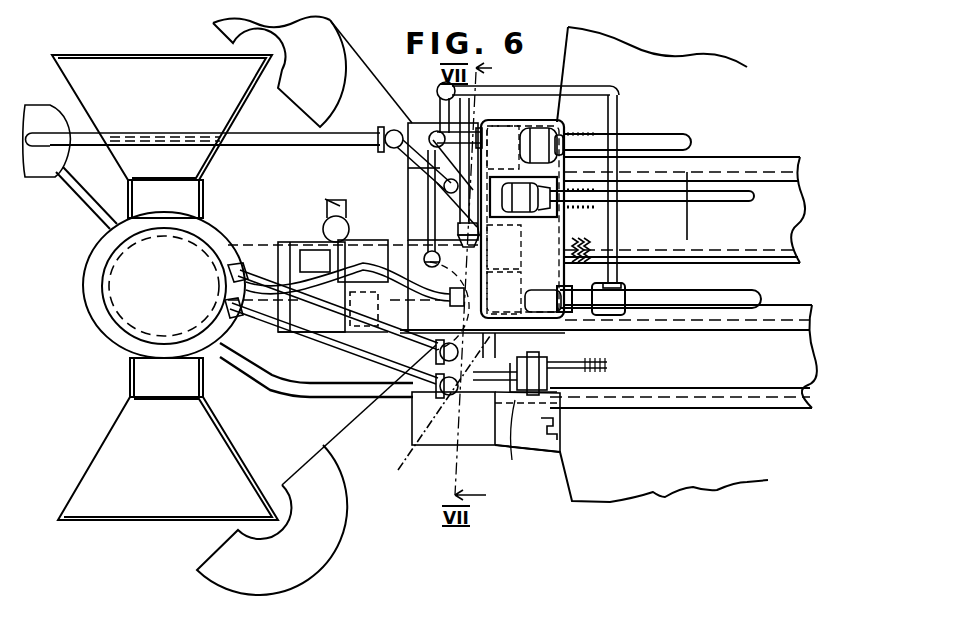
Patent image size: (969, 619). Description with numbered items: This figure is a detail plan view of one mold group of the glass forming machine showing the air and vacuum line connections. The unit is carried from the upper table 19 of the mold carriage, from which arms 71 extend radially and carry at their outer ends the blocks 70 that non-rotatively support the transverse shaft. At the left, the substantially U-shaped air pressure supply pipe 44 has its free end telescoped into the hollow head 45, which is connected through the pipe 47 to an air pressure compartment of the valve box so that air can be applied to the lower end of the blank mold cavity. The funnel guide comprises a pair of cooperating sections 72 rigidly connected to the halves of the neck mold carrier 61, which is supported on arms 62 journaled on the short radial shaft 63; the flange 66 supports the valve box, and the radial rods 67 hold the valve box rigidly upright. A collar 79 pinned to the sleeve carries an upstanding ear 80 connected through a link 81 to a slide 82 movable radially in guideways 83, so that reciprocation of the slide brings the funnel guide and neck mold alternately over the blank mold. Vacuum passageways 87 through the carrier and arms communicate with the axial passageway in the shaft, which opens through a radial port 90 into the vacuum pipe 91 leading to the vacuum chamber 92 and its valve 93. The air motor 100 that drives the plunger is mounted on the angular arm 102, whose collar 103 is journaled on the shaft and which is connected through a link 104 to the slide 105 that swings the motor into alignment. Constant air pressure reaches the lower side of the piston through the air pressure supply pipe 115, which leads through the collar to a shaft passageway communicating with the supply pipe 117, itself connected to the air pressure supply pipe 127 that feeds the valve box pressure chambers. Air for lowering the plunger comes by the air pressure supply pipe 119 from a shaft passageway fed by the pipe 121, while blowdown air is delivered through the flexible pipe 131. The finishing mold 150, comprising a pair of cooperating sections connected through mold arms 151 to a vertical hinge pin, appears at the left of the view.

The upper table 19 is at (610, 497).
The air pressure supply pipe 44 is at (82, 206).
The hollow head 45 is at (52, 92).
The pipe 47 is at (286, 144).
The neck mold carrier 61 is at (92, 254).
The arms 62 is at (268, 240).
The radial shaft 63 is at (363, 283).
The flange 66 is at (566, 334).
The radial rods 67 is at (634, 198).
The blocks 70 is at (434, 456).
The arms 71 is at (520, 444).
The funnel guide sections 72 is at (108, 62).
The collar 79 is at (412, 186).
The ear 80 is at (415, 208).
The link 81 is at (420, 176).
The slide 82 is at (686, 232).
The guideways 83 is at (775, 157).
The vacuum passageways 87 is at (292, 236).
The radial port 90 is at (441, 262).
The vacuum pipe 91 is at (427, 230).
The vacuum chamber 92 is at (498, 122).
The valve 93 is at (520, 155).
The air motor 100 is at (176, 271).
The angular arm 102 is at (280, 375).
The collar 103 is at (495, 356).
The link 104 is at (514, 433).
The slide 105 is at (724, 392).
The air pressure supply pipe 115 is at (418, 332).
The supply pipe 117 is at (620, 105).
The air pressure supply pipe 119 is at (376, 366).
The pipe 121 is at (480, 90).
The air pressure supply pipe 127 is at (710, 290).
The flexible pipe 131 is at (382, 262).
The finishing mold 150 is at (298, 104).
The mold arms 151 is at (376, 92).